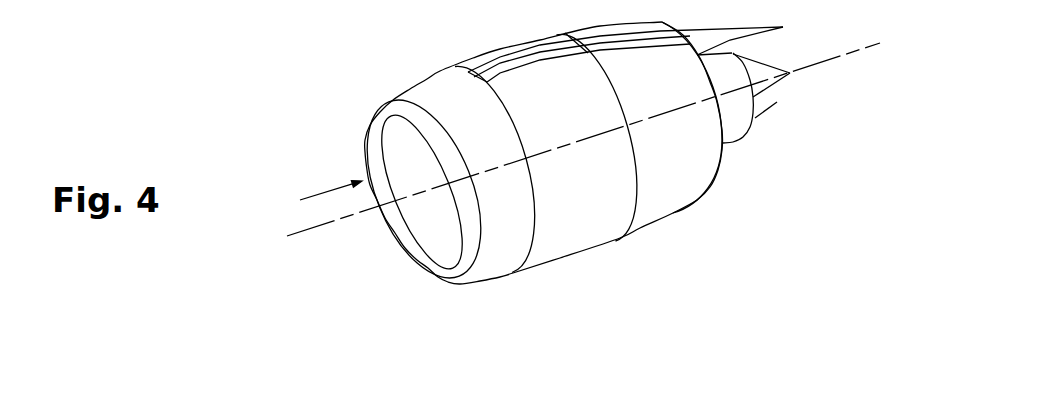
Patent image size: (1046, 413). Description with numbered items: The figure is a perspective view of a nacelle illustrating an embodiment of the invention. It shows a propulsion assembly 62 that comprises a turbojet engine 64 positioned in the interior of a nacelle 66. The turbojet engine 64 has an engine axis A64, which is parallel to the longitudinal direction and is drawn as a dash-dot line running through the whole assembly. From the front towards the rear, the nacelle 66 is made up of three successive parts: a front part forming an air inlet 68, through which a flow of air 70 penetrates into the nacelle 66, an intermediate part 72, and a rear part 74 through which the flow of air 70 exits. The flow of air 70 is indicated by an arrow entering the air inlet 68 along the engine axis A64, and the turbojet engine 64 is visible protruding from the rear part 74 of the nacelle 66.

The propulsion assembly 62 is at (559, 176).
The turbojet engine 64 is at (767, 126).
The engine axis A64 is at (335, 222).
The nacelle 66 is at (577, 176).
The air inlet 68 is at (524, 280).
The flow of air 70 is at (322, 193).
The intermediate part 72 is at (616, 254).
The rear part 74 is at (718, 207).